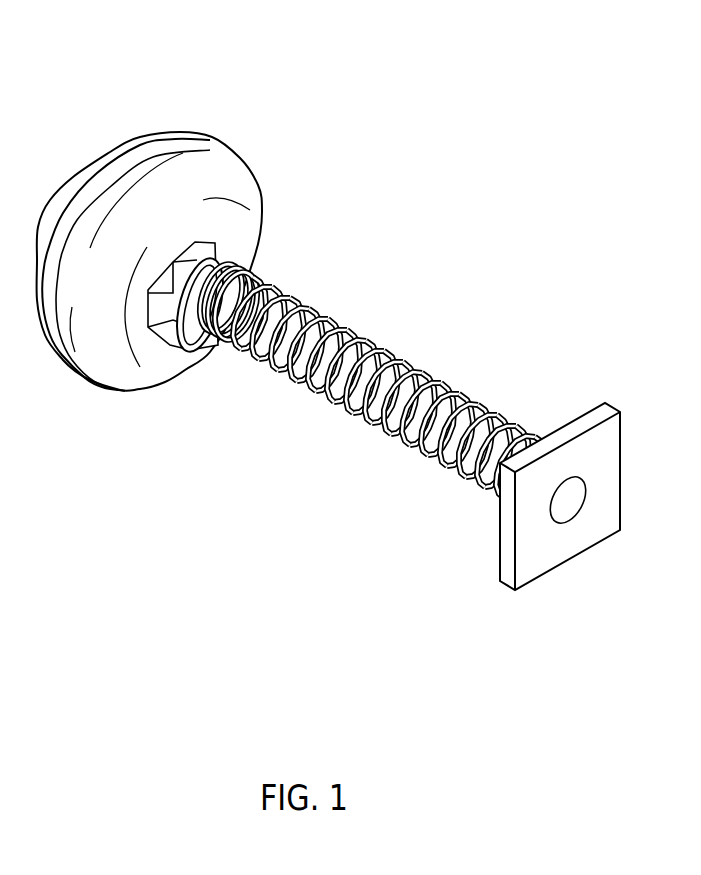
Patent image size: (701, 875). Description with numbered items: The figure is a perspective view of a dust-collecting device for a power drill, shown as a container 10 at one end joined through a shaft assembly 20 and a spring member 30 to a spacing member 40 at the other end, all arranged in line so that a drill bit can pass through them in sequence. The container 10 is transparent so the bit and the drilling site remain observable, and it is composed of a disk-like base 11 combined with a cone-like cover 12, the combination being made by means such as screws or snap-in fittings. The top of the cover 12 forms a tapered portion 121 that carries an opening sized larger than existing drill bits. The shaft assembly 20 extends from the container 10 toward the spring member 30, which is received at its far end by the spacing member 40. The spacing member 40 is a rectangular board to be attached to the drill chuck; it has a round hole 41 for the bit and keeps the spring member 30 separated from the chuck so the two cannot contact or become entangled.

The container 10 is at (209, 92).
The base 11 is at (245, 190).
The cover 12 is at (140, 147).
The tapered portion 121 is at (55, 198).
The shaft assembly 20 is at (268, 343).
The spring member 30 is at (438, 380).
The spacing member 40 is at (584, 440).
The round hole 41 is at (565, 508).